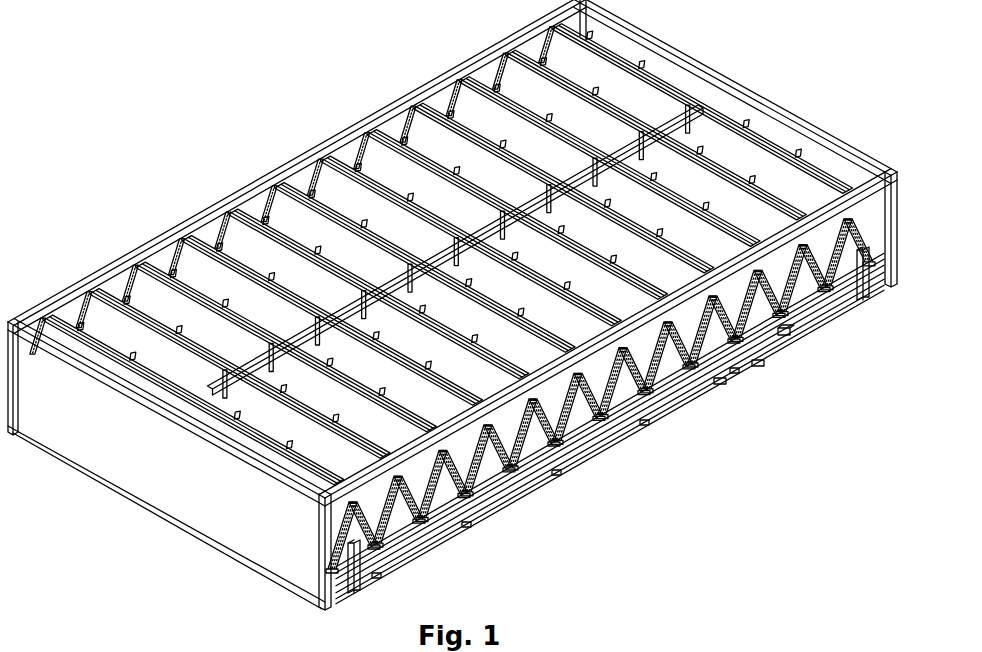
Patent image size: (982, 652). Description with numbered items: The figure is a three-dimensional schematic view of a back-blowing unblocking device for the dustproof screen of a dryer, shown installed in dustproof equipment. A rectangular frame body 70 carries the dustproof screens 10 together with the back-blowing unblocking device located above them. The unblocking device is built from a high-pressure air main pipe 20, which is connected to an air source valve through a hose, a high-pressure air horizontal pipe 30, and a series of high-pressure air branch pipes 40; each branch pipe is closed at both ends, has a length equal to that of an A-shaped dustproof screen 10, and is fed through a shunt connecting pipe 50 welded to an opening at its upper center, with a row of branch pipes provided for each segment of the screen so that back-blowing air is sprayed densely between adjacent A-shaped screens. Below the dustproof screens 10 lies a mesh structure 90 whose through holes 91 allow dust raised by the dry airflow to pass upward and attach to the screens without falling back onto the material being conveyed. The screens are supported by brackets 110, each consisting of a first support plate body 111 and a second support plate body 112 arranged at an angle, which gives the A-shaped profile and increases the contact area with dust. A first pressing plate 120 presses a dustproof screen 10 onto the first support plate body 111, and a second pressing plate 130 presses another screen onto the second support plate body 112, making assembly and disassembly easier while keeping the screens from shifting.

The dustproof screen 10 is at (862, 298).
The high-pressure air main pipe 20 is at (443, 217).
The high-pressure air horizontal pipe 30 is at (322, 168).
The high-pressure air branch pipe 40 is at (233, 310).
The shunt connecting pipe 50 is at (583, 178).
The frame body 70 is at (90, 280).
The mesh structure 90 is at (548, 469).
The through hole 91 is at (470, 527).
The bracket 110 is at (758, 423).
The first support plate body 111 is at (721, 380).
The second support plate body 112 is at (759, 363).
The first pressing plate 120 is at (693, 381).
The second pressing plate 130 is at (785, 333).